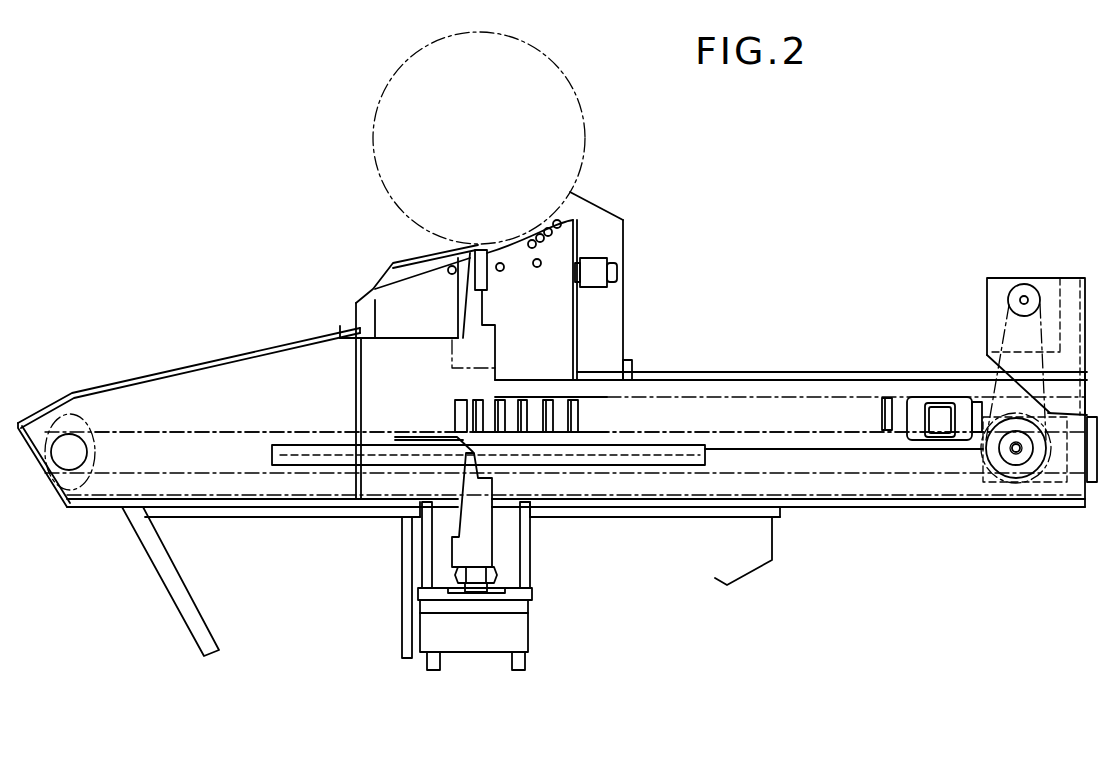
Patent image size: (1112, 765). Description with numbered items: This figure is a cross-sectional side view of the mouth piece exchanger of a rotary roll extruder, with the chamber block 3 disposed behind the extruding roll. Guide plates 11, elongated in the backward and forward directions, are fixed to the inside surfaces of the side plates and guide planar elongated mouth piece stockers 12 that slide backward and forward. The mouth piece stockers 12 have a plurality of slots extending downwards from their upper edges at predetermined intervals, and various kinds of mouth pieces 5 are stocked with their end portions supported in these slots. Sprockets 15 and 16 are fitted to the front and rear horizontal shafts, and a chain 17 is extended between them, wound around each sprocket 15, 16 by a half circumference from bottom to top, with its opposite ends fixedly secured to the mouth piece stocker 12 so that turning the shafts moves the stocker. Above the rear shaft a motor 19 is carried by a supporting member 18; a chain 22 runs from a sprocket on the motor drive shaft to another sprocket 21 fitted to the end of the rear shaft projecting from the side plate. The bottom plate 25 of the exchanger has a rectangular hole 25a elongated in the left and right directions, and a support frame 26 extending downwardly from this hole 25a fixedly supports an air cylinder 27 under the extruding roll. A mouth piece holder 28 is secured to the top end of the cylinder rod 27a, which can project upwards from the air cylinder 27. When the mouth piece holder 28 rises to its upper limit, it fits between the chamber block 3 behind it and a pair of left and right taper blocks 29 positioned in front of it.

The chamber block 3 is at (563, 332).
The mouth pieces 5 is at (474, 400).
The guide plates 11 is at (333, 444).
The mouth piece stockers 12 is at (468, 402).
The sprocket 15 is at (85, 438).
The sprocket 16 is at (1012, 463).
The chain 17 is at (243, 430).
The supporting member 18 is at (1086, 278).
The motor 19 is at (1043, 280).
The sprocket 21 is at (1032, 476).
The chain 22 is at (1003, 312).
The bottom plate 25 is at (825, 507).
The rectangular hole 25a is at (493, 504).
The support frame 26 is at (422, 574).
The air cylinder 27 is at (520, 632).
The cylinder rod 27a is at (470, 592).
The mouth piece holder 28 is at (465, 523).
The taper blocks 29 is at (390, 283).